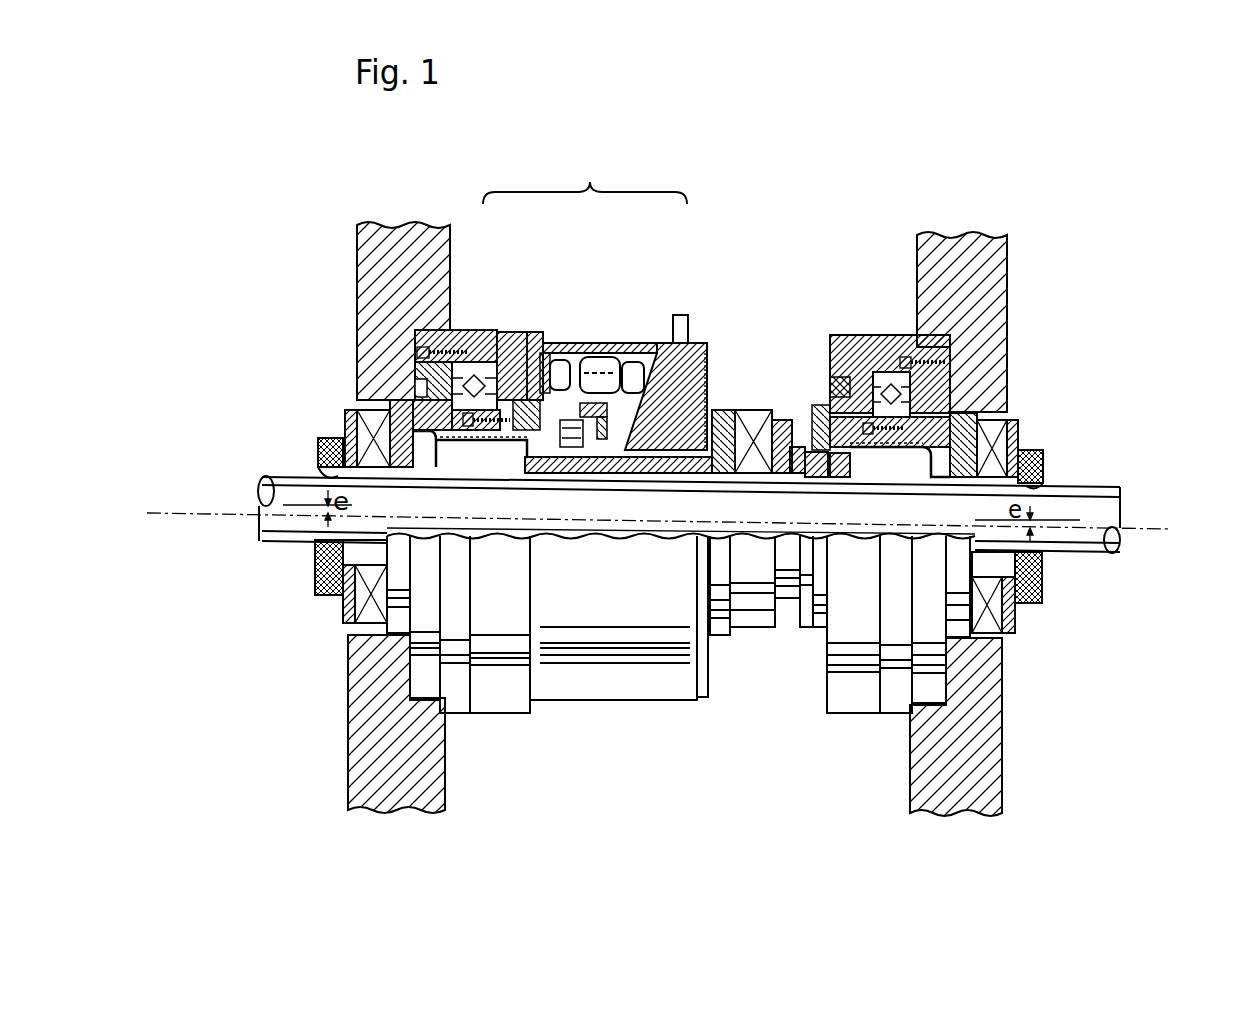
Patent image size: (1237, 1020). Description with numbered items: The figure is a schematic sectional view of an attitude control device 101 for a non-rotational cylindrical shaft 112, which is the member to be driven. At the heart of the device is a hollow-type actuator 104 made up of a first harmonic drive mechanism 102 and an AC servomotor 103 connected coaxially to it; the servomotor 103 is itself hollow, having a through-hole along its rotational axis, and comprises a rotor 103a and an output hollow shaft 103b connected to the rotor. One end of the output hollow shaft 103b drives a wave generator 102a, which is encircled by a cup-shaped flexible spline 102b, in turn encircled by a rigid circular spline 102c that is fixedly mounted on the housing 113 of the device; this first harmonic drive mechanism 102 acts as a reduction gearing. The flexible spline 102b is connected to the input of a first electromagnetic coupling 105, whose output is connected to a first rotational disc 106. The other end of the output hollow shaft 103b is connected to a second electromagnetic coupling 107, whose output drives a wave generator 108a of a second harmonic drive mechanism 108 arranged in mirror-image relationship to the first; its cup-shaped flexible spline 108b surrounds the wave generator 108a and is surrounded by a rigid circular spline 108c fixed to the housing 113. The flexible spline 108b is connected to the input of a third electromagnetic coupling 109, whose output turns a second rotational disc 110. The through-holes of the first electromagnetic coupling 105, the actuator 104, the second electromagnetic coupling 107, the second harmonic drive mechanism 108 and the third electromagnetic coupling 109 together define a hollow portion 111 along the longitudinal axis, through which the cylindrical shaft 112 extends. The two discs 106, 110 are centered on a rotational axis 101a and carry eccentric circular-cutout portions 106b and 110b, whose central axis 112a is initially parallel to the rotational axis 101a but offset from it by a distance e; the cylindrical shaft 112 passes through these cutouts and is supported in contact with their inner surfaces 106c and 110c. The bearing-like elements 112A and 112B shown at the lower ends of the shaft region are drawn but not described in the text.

The attitude control device 101 is at (768, 256).
The rotational axis 101a is at (187, 517).
The first harmonic drive mechanism 102 is at (507, 412).
The wave generator 102a is at (562, 358).
The flexible spline 102b is at (543, 345).
The rigid circular spline 102c is at (518, 367).
The AC servomotor 103 is at (610, 340).
The rotor 103a is at (640, 350).
The output hollow shaft 103b is at (688, 340).
The hollow-type actuator 104 is at (585, 178).
The first electromagnetic coupling 105 is at (368, 418).
The first rotational disc 106 is at (318, 440).
The eccentric circular-cutout portion 106b is at (316, 478).
The inner surface 106c is at (312, 540).
The second electromagnetic coupling 107 is at (745, 427).
The second harmonic drive mechanism 108 is at (860, 325).
The wave generator 108a is at (813, 450).
The flexible spline 108b is at (822, 440).
The rigid circular spline 108c is at (830, 425).
The third electromagnetic coupling 109 is at (1005, 420).
The second rotational disc 110 is at (1035, 455).
The eccentric circular-cutout portion 110b is at (1053, 487).
The inner surface 110c is at (1045, 553).
The hollow portion 111 is at (568, 478).
The cylindrical shaft 112 is at (1110, 510).
The central axis 112a is at (290, 506).
The bearing 112A is at (1078, 553).
The bearing 112B is at (338, 600).
The housing 113 is at (357, 257).